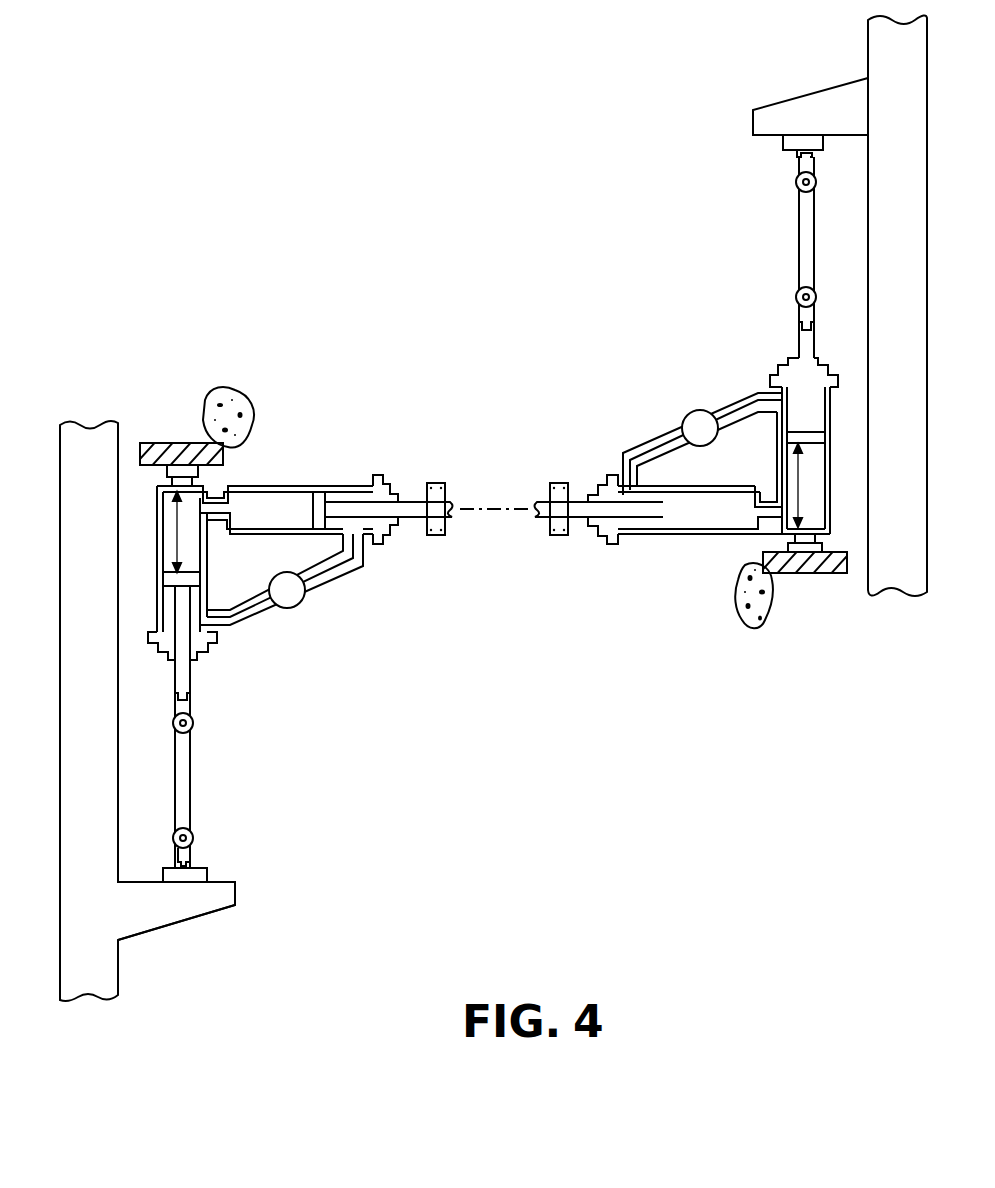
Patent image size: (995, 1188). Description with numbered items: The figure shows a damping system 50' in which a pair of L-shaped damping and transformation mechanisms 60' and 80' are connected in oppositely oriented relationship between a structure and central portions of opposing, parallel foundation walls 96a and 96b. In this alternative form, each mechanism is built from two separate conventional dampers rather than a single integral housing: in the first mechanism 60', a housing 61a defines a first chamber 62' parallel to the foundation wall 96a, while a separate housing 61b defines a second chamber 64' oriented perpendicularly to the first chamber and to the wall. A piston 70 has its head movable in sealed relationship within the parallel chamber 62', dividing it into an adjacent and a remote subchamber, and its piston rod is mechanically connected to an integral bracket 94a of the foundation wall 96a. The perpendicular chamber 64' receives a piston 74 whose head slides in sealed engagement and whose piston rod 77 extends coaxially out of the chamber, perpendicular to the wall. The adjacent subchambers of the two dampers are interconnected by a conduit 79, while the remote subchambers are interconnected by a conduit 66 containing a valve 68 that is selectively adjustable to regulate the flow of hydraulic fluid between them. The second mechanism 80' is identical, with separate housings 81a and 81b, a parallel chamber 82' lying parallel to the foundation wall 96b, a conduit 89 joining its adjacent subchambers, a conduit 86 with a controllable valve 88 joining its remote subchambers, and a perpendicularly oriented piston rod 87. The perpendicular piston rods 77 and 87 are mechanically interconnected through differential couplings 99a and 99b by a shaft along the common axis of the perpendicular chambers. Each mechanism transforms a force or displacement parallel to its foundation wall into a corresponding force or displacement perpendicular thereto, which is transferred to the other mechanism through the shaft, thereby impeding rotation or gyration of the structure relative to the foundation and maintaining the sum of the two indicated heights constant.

The system 50' is at (489, 385).
The damping and transformation mechanism 60' is at (310, 634).
The housing 61a is at (157, 480).
The housing 61b is at (278, 484).
The first chamber 62' is at (168, 573).
The second chamber 64' is at (356, 487).
The conduit 66 is at (338, 578).
The valve 68 is at (284, 608).
The piston 70 is at (196, 690).
The piston 74 is at (410, 490).
The piston rod 77 is at (410, 520).
The conduit 79 is at (218, 493).
The damping and transformation mechanism 80' is at (703, 395).
The housing 81a is at (831, 495).
The housing 81b is at (733, 536).
The first chamber 82' is at (822, 446).
The conduit 86 is at (760, 402).
The piston rod 87 is at (583, 518).
The valve 88 is at (686, 418).
The conduit 89 is at (768, 496).
The integral bracket 94a is at (170, 921).
The foundation wall 96a is at (112, 770).
The foundation wall 96b is at (868, 65).
The differential coupling 99a is at (438, 536).
The differential coupling 99b is at (559, 536).